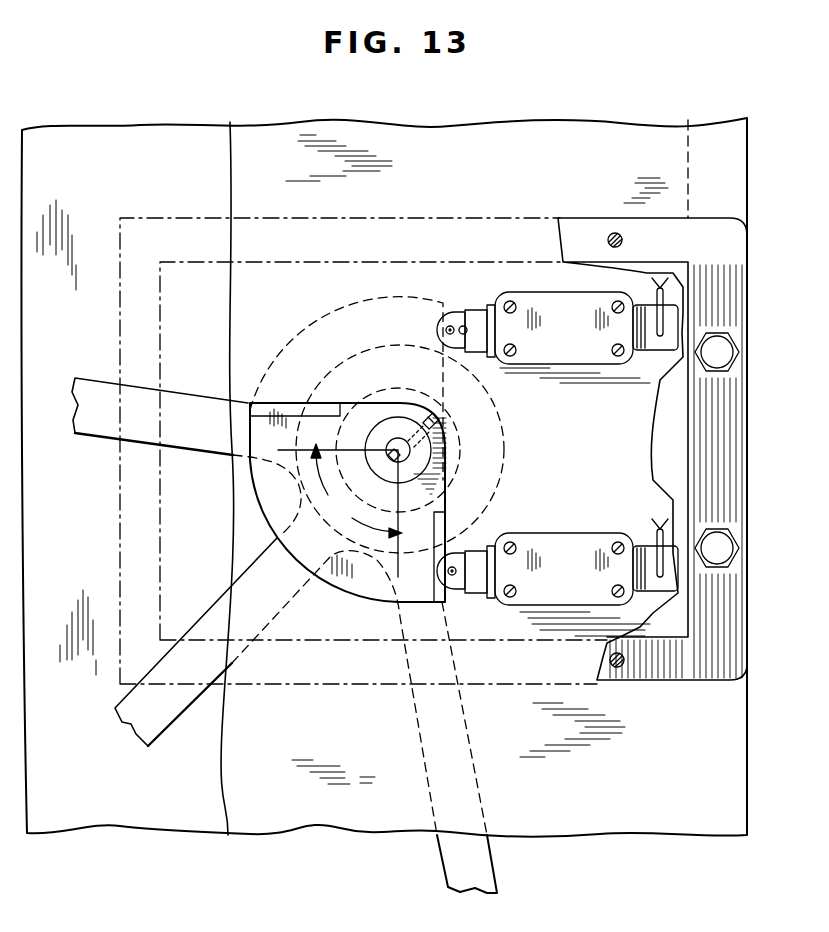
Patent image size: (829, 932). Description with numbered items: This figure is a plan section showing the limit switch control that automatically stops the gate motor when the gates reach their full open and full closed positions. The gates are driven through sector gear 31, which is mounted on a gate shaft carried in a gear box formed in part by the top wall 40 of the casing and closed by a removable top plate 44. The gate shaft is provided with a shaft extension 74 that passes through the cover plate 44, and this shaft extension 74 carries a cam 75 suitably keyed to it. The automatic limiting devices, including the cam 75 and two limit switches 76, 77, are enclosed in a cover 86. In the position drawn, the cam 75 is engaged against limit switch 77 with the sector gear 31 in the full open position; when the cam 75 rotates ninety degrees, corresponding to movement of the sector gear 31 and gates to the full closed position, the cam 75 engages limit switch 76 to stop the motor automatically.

The sector gear 31 is at (103, 420).
The top wall 40 is at (185, 800).
The removable top plate 44 is at (318, 740).
The shaft extension 74 is at (404, 452).
The cam 75 is at (294, 343).
The limit switch 76 is at (578, 335).
The limit switch 77 is at (580, 575).
The cover 86 is at (513, 227).